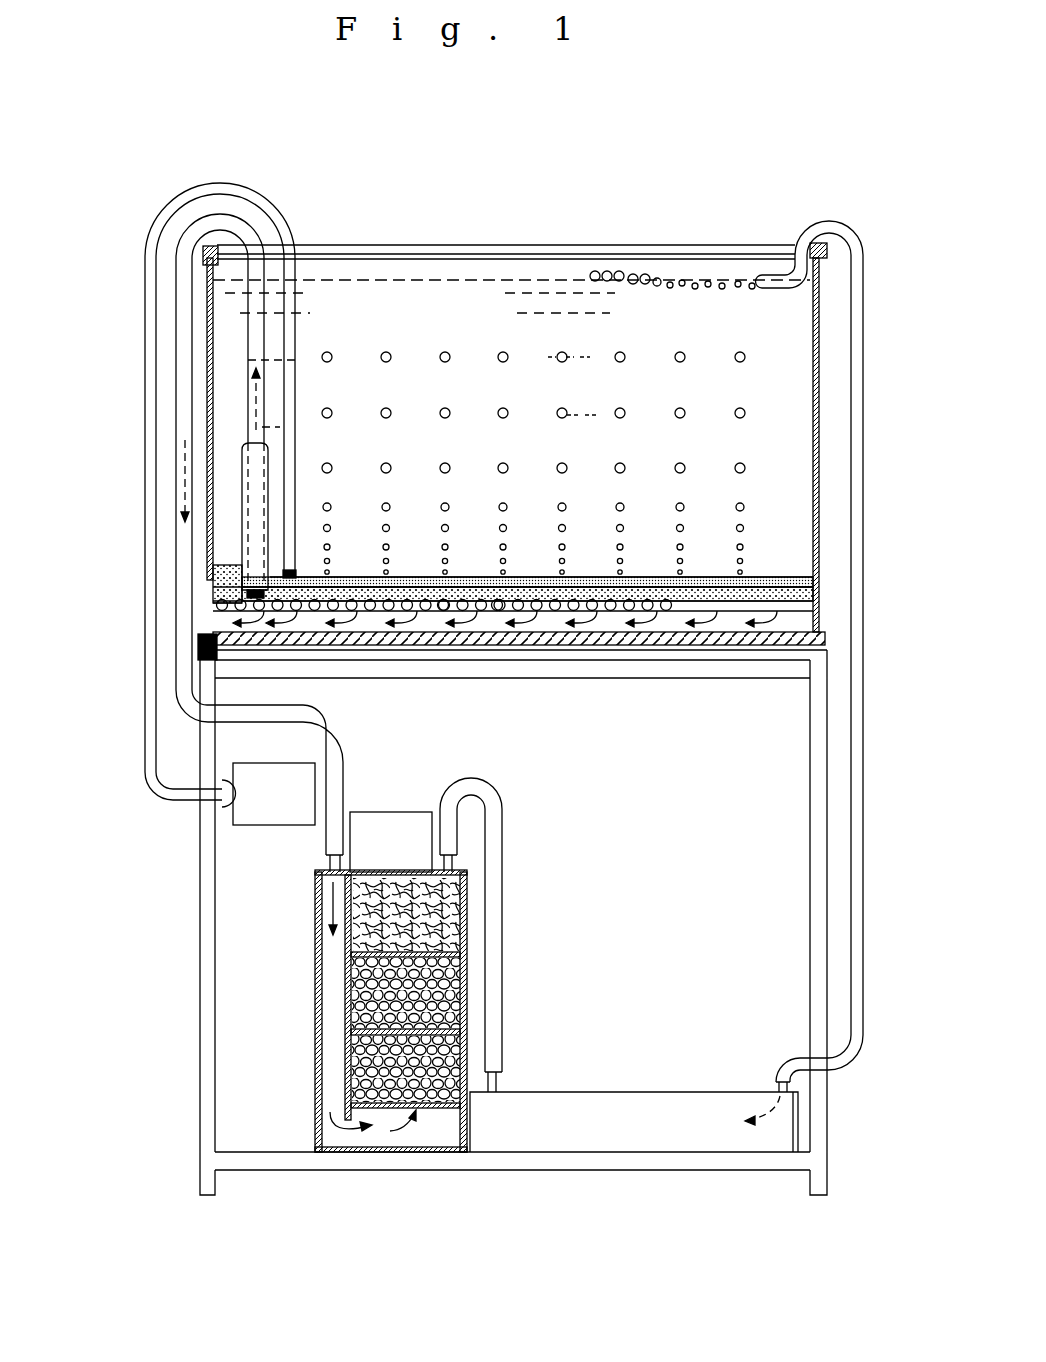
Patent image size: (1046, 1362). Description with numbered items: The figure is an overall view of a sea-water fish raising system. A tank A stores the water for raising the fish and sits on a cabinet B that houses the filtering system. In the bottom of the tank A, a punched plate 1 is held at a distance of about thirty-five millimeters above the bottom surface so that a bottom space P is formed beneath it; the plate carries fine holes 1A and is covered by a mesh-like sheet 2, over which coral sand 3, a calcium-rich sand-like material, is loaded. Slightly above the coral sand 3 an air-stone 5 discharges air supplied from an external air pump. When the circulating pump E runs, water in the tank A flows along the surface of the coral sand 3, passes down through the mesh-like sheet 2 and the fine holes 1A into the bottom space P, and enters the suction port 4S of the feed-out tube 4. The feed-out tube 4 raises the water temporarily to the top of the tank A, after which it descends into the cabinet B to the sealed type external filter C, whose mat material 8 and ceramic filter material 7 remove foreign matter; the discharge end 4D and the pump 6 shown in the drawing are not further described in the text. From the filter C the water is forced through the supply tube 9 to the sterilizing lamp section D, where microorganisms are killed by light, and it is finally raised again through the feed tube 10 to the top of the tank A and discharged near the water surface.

The feed-out tube 4 is at (243, 232).
The discharge port 4D is at (276, 505).
The suction port 4S is at (257, 613).
The air-stone 5 is at (422, 578).
The coral sand 3 is at (515, 590).
The mesh-like sheet 2 is at (692, 600).
The punched plate 1 is at (547, 612).
The fine holes 1A is at (497, 606).
The bottom space P is at (655, 624).
The tank A is at (828, 398).
The feed tube 10 is at (864, 579).
The pump 6 is at (273, 818).
The pump E is at (388, 822).
The supply tube 9 is at (490, 845).
The sealed type external filter C is at (467, 953).
The mat material 8 is at (347, 941).
The ceramic filter material 7 is at (345, 1058).
The cabinet B is at (196, 937).
The sterilizing lamp section D is at (615, 1097).